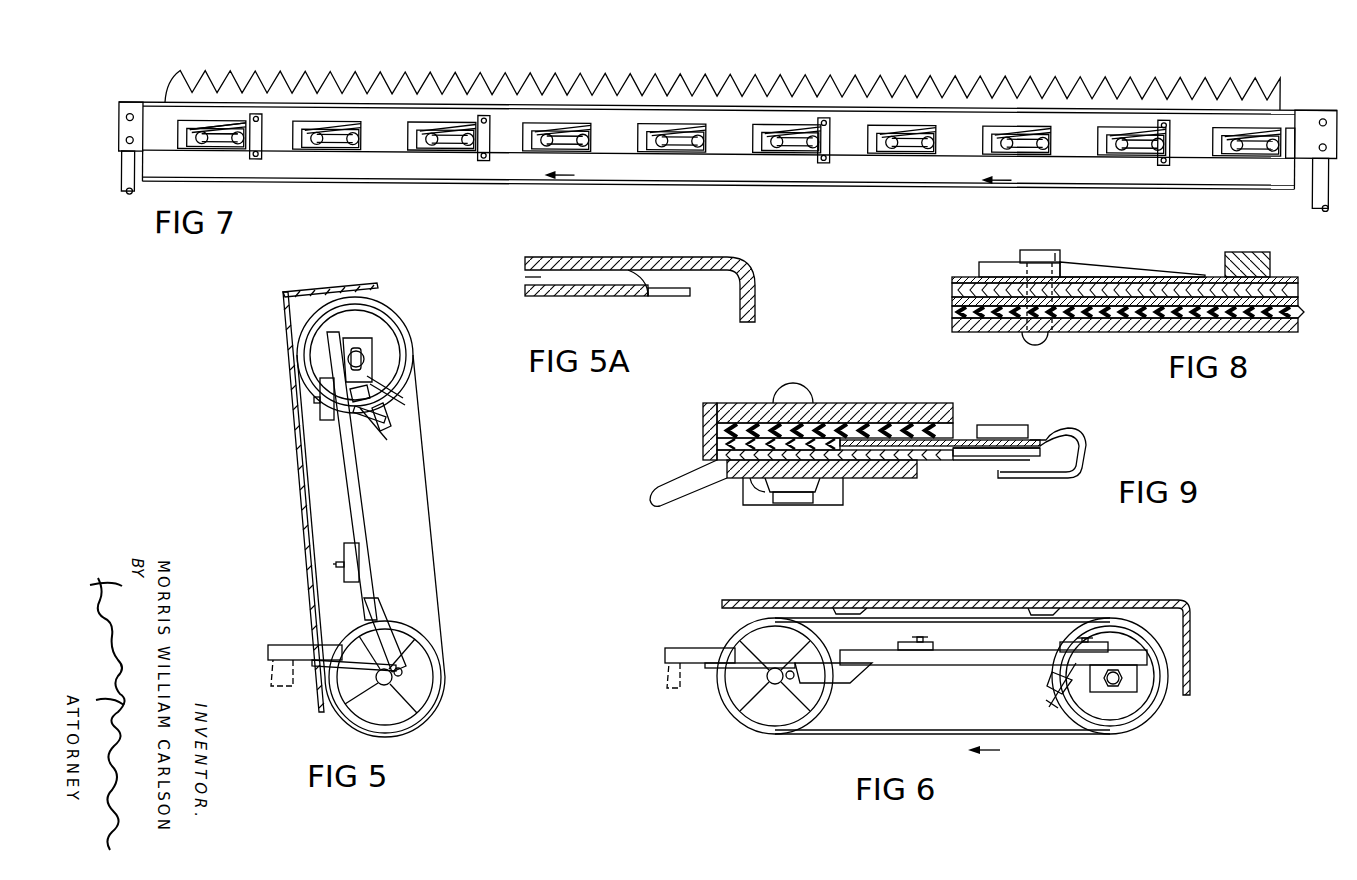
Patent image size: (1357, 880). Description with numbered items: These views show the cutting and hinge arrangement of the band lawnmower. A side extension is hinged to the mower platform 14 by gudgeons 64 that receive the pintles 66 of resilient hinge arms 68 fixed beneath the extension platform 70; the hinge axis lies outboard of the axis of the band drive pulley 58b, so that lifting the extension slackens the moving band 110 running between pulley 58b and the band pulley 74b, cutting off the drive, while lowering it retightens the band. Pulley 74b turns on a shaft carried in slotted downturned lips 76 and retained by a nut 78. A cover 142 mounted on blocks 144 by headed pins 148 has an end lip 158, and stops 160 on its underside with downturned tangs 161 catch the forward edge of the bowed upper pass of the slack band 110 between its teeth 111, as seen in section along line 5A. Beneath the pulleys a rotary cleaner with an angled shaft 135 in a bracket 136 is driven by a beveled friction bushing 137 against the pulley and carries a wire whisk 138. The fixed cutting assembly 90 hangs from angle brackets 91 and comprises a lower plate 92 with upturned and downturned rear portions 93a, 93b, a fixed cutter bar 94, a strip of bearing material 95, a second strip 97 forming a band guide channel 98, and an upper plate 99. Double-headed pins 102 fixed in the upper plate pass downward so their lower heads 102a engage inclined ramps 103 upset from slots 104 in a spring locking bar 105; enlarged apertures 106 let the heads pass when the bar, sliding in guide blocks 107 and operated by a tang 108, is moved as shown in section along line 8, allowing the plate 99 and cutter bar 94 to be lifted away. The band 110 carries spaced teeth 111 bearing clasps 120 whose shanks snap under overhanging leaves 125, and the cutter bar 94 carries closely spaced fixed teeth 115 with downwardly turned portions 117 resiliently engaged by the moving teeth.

In FIG. 5, the platform 14 is at (268, 646).
In FIG. 6, the platform 14 is at (692, 648).
In FIG. 5, the band drive pulley 58b is at (447, 678).
In FIG. 6, the band drive pulley 58b is at (781, 731).
In FIG. 5, the gudgeon 64 is at (316, 671).
In FIG. 6, the gudgeon 64 is at (710, 671).
In FIG. 5, the pintle 66 is at (403, 670).
In FIG. 6, the pintle 66 is at (796, 678).
In FIG. 5, the hinge arm 68 is at (388, 610).
In FIG. 6, the hinge arm 68 is at (853, 684).
In FIG. 5, the platform 70 is at (358, 511).
In FIG. 6, the platform 70 is at (980, 666).
In FIG. 5, the band pulley 74b is at (372, 309).
In FIG. 6, the band pulley 74b is at (1130, 733).
In FIG. 5, the downturned lip 76 is at (372, 345).
In FIG. 6, the downturned lip 76 is at (1138, 682).
In FIG. 5, the nut 78 is at (364, 358).
In FIG. 6, the nut 78 is at (1113, 678).
In FIG. 7, the fixed cutting assembly 90 is at (668, 50).
In FIG. 7, the angle bracket 91 is at (123, 181).
In FIG. 7, the lower plate 92 is at (150, 101).
In FIG. 8, the lower plate 92 is at (952, 280).
In FIG. 9, the lower plate 92 is at (877, 479).
In FIG. 9, the upturned rear portion 93a is at (710, 403).
In FIG. 7, the downturned rear portion 93b is at (400, 182).
In FIG. 9, the downturned rear portion 93b is at (660, 509).
In FIG. 7, the fixed cutter bar 94 is at (832, 78).
In FIG. 8, the fixed cutter bar 94 is at (952, 291).
In FIG. 9, the fixed cutter bar 94 is at (717, 457).
In FIG. 8, the strip of non-frictional bearing material 95 is at (952, 311).
In FIG. 9, the strip of non-frictional bearing material 95 is at (717, 431).
In FIG. 8, the strip of non-frictional material 97 is at (952, 323).
In FIG. 9, the strip of non-frictional material 97 is at (704, 415).
In FIG. 9, the band guide channel 98 is at (870, 448).
In FIG. 8, the upper plate 99 is at (967, 333).
In FIG. 9, the upper plate 99 is at (752, 403).
In FIG. 8, the double-headed pin 102 is at (1049, 336).
In FIG. 9, the double-headed pin 102 is at (797, 392).
In FIG. 7, the lower head 102a is at (200, 129).
In FIG. 8, the lower head 102a is at (1050, 251).
In FIG. 9, the lower head 102a is at (795, 504).
In FIG. 7, the inclined ramp 103 is at (640, 124).
In FIG. 8, the inclined ramp 103 is at (1106, 263).
In FIG. 9, the inclined ramp 103 is at (768, 489).
In FIG. 7, the elongated slot 104 is at (216, 140).
In FIG. 7, the locking bar 105 is at (634, 145).
In FIG. 8, the locking bar 105 is at (965, 277).
In FIG. 9, the locking bar 105 is at (745, 487).
In FIG. 7, the enlarged aperture 106 is at (252, 136).
In FIG. 8, the enlarged aperture 106 is at (1013, 271).
In FIG. 7, the guide block 107 is at (263, 153).
In FIG. 8, the guide block 107 is at (1258, 256).
In FIG. 9, the guide block 107 is at (751, 484).
In FIG. 7, the tang 108 is at (1291, 119).
In FIG. 5, the moving band 110 is at (437, 582).
In FIG. 5A, the moving band 110 is at (583, 297).
In FIG. 9, the moving band 110 is at (928, 440).
In FIG. 6, the moving band 110 is at (986, 620).
In FIG. 5A, the tooth 111 is at (684, 297).
In FIG. 9, the tooth 111 is at (988, 456).
In FIG. 7, the fixed tooth 115 is at (522, 76).
In FIG. 9, the fixed tooth 115 is at (937, 460).
In FIG. 9, the downwardly turned portion 117 is at (968, 468).
In FIG. 9, the clasp 120 is at (1086, 443).
In FIG. 9, the overhanging leaf 125 is at (1014, 430).
In FIG. 5, the downwardly angled shaft 135 is at (387, 414).
In FIG. 5, the bracket 136 is at (370, 427).
In FIG. 5, the beveled friction bushing 137 is at (370, 392).
In FIG. 6, the beveled friction bushing 137 is at (1062, 670).
In FIG. 5, the wire whisk 138 is at (392, 430).
In FIG. 6, the wire whisk 138 is at (1040, 690).
In FIG. 5, the cover 142 is at (287, 512).
In FIG. 5A, the cover 142 is at (641, 257).
In FIG. 6, the cover 142 is at (736, 600).
In FIG. 5, the block 144 is at (324, 421).
In FIG. 6, the block 144 is at (934, 645).
In FIG. 5, the headed pin 148 is at (334, 561).
In FIG. 6, the headed pin 148 is at (914, 638).
In FIG. 5, the downturned lip 158 is at (327, 291).
In FIG. 6, the downturned lip 158 is at (1191, 681).
In FIG. 5A, the stop 160 is at (525, 278).
In FIG. 6, the stop 160 is at (851, 607).
In FIG. 5A, the downturned forward tang 161 is at (649, 297).
In FIG. 6, the downturned forward tang 161 is at (868, 608).
In FIG. 7, the section line 8- 8 is at (722, 157).
In FIG. 5, the section line 5A- 5A is at (280, 600).